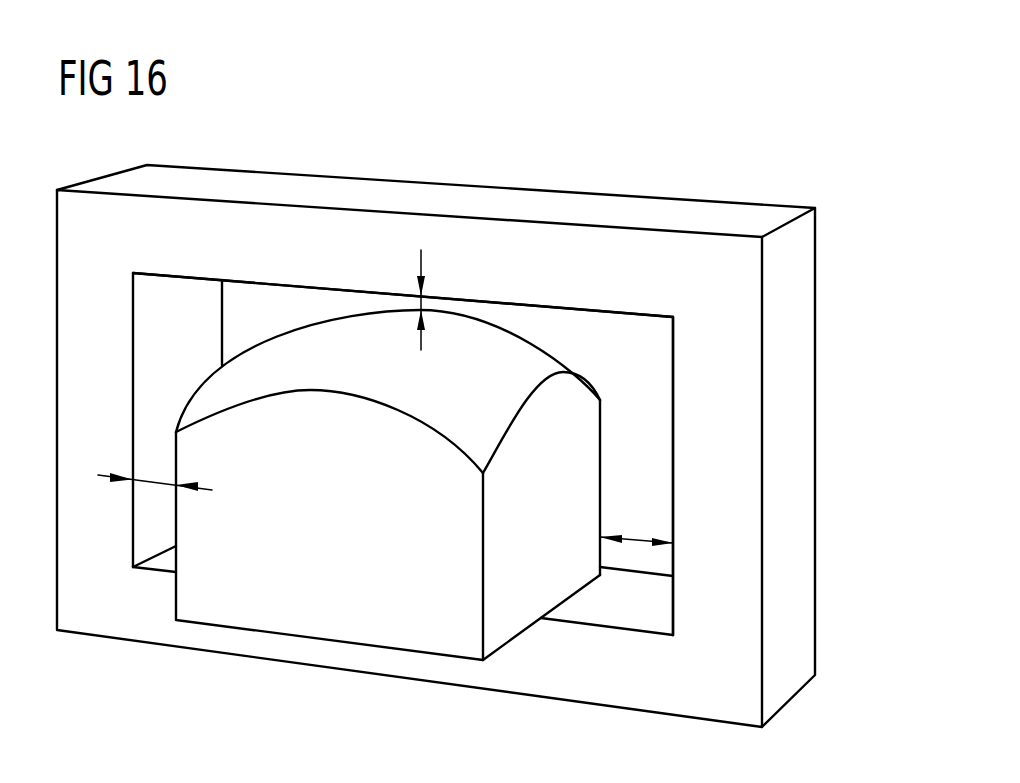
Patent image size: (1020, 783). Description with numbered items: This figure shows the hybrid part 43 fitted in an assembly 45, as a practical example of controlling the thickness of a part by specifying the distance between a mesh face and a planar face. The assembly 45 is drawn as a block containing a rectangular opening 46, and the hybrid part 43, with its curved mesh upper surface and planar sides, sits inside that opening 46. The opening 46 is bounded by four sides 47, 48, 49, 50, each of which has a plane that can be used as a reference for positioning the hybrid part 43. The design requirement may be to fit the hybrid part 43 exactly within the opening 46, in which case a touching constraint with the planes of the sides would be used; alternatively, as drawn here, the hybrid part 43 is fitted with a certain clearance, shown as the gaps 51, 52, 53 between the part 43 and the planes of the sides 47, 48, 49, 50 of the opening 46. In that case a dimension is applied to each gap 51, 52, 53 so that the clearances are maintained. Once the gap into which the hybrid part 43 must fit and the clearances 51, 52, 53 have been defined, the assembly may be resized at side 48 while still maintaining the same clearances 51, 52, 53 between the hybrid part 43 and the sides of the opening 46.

The hybrid part 43 is at (183, 593).
The assembly 45 is at (680, 169).
The opening 46 is at (661, 412).
The side of the opening 47 is at (147, 320).
The side of the opening 48 is at (603, 318).
The side of the opening 49 is at (607, 615).
The side of the opening 50 is at (673, 465).
The gap 51 is at (423, 300).
The gap 52 is at (638, 537).
The gap 53 is at (143, 480).